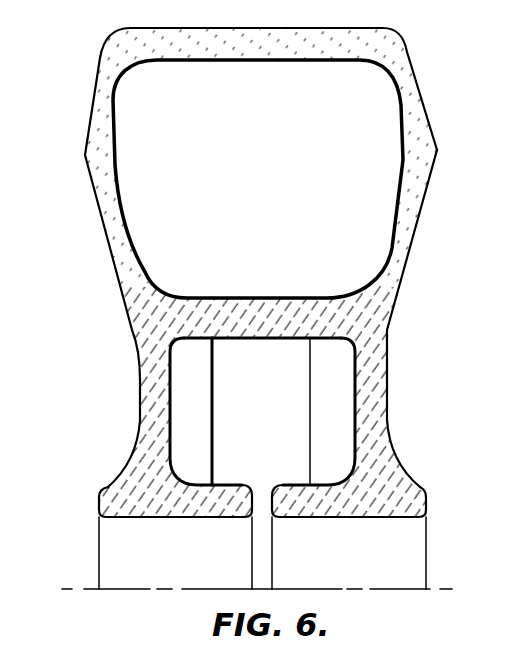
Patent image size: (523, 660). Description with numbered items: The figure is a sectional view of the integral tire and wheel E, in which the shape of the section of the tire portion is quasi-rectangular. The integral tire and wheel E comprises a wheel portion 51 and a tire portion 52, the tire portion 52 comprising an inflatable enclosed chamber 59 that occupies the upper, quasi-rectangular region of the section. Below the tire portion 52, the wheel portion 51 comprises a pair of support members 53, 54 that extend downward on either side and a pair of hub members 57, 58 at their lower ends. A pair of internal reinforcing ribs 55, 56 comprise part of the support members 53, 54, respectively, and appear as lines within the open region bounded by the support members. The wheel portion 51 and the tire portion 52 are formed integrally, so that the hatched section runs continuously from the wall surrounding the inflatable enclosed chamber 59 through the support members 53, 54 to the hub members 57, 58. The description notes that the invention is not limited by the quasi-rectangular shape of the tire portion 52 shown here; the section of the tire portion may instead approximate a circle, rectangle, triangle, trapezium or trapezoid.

The integral tire and wheel E is at (418, 78).
The wheel portion 51 is at (385, 360).
The tire portion 52 is at (105, 92).
The support member 53 is at (153, 410).
The support member 54 is at (373, 421).
The internal reinforcing rib 55 is at (193, 390).
The internal reinforcing rib 56 is at (325, 437).
The hub member 57 is at (120, 498).
The hub member 58 is at (417, 488).
The inflatable enclosed chamber 59 is at (268, 178).